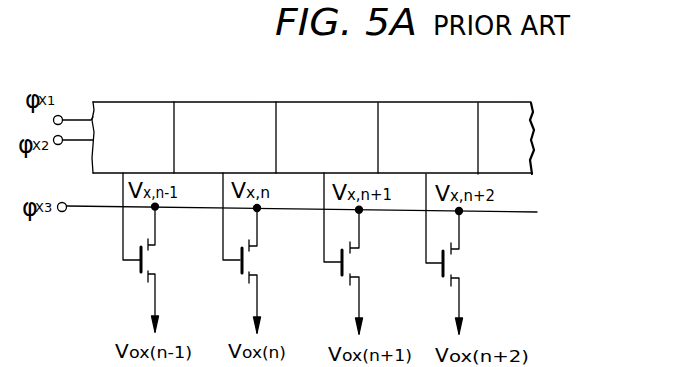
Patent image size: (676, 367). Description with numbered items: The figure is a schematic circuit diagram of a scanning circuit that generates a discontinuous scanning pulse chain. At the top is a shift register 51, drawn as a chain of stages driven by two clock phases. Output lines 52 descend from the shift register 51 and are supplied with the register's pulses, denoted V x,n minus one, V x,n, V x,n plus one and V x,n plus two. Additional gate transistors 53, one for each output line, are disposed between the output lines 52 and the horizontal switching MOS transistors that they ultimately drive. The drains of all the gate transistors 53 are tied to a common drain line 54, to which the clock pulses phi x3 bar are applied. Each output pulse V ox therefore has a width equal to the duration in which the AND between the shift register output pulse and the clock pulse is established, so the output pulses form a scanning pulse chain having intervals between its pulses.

The shift register 51 is at (413, 104).
The output lines 52 is at (223, 191).
The gate transistors 53 is at (456, 262).
The drain line 54 is at (515, 211).